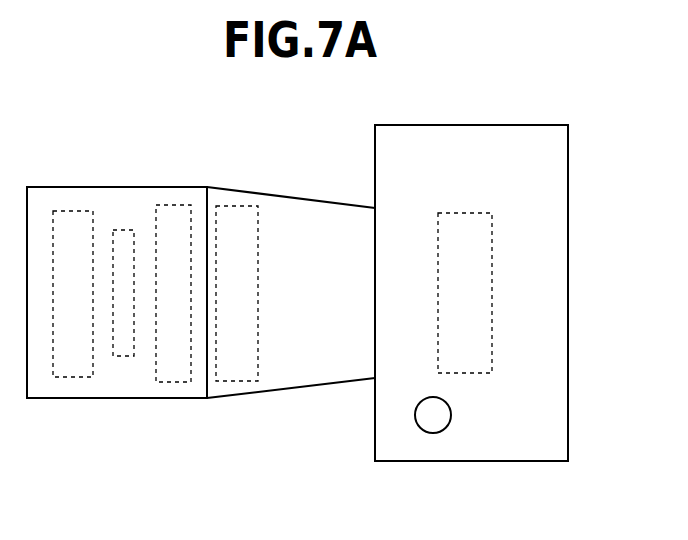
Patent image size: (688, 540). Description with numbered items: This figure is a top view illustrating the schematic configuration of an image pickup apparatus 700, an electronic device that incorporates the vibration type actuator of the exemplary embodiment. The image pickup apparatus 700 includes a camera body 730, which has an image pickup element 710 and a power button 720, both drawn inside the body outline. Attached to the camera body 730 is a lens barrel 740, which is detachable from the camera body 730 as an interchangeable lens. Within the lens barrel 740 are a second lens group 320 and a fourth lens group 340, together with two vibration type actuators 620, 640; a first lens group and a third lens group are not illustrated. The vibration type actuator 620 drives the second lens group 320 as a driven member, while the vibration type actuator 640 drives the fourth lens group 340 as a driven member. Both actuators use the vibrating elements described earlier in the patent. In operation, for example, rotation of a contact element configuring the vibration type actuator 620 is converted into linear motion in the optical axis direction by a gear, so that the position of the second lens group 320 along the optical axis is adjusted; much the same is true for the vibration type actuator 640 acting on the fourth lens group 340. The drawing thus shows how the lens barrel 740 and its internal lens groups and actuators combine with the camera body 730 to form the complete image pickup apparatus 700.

The image pickup apparatus 700 is at (348, 110).
The image pickup element 710 is at (478, 286).
The power button 720 is at (433, 421).
The camera body 730 is at (502, 452).
The lens barrel 740 is at (108, 197).
The second lens group 320 is at (73, 365).
The fourth lens group 340 is at (125, 347).
The vibration type actuator 620 is at (173, 216).
The vibration type actuator 640 is at (238, 215).